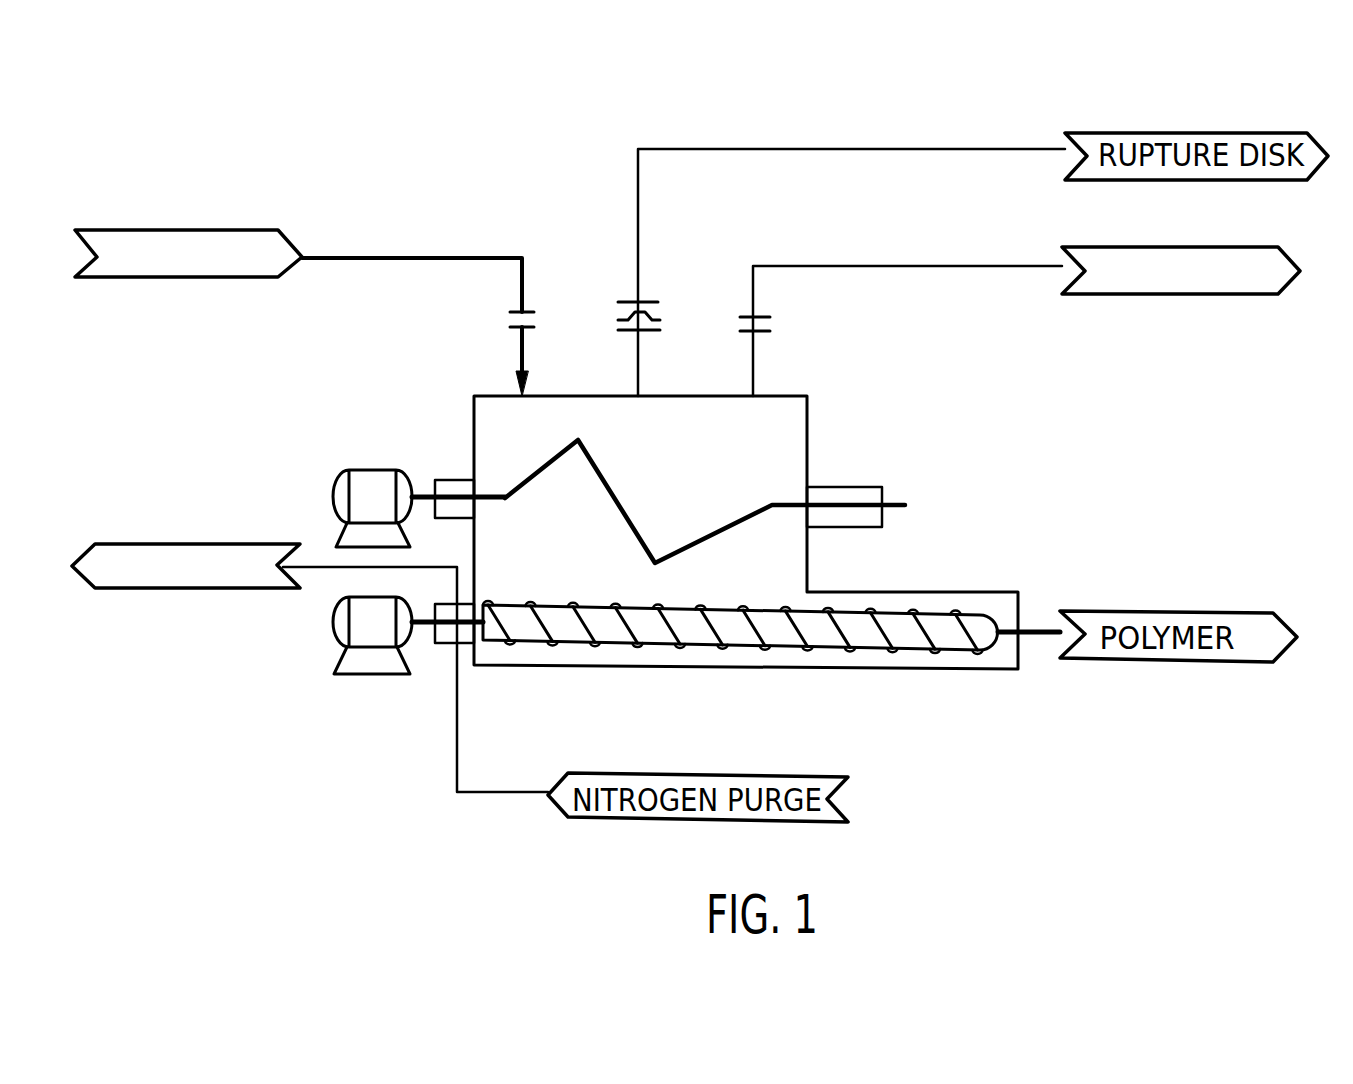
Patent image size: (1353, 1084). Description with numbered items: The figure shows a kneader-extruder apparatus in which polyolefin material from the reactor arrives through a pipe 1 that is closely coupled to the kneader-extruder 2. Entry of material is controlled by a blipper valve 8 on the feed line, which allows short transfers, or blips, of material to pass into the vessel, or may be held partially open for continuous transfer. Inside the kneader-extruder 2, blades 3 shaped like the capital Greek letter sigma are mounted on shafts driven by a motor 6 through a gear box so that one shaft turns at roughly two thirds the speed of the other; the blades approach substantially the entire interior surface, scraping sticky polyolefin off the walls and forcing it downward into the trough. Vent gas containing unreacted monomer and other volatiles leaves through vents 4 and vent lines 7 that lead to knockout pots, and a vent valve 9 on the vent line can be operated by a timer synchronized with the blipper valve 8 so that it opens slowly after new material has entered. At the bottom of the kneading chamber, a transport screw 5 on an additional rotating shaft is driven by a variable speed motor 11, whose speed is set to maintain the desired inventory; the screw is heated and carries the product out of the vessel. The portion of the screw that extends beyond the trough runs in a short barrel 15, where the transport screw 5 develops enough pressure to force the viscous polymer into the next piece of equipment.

The pipe 1 is at (221, 278).
The kneader-extruder 2 is at (808, 452).
The blades 3 is at (729, 528).
The vents 4 is at (1211, 294).
The transport screw 5 is at (755, 651).
The motor 6 is at (333, 492).
The vent lines 7 is at (955, 267).
The blipper valve 8 is at (543, 314).
The vent valve 9 is at (773, 321).
The variable speed motor 11 is at (365, 675).
The barrel 15 is at (1018, 677).